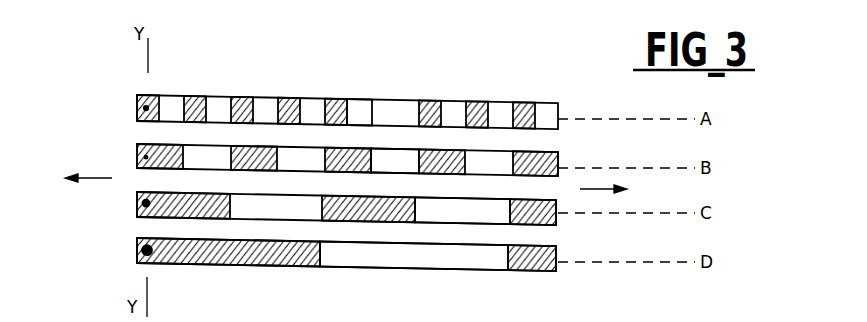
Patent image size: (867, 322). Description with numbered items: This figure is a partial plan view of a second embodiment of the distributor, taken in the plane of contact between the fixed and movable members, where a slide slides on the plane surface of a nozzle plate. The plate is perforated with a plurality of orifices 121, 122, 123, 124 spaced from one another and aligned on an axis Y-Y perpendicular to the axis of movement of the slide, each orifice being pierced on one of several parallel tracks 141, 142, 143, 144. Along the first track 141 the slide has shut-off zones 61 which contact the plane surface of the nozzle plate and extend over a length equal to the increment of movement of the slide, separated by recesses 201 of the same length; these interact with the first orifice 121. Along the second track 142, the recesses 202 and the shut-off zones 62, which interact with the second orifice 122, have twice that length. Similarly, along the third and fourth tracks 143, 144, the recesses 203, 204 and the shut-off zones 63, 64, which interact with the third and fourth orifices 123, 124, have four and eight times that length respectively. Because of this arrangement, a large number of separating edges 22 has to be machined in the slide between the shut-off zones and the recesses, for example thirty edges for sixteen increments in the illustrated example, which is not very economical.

The first orifice 121 is at (140, 106).
The second orifice 122 is at (140, 158).
The third orifice 123 is at (137, 204).
The fourth orifice 124 is at (137, 251).
The shut-off zones 61 is at (248, 104).
The shut-off zones 62 is at (243, 155).
The shut-off zone 63 is at (175, 204).
The shut-off zone 64 is at (223, 249).
The recesses 201 is at (360, 114).
The recesses 202 is at (398, 163).
The recesses 203 is at (447, 210).
The recesses 204 is at (398, 258).
The first track 141 is at (580, 119).
The second track 142 is at (580, 168).
The third track 143 is at (580, 213).
The fourth track 144 is at (580, 262).
The separating edges 22 is at (320, 253).